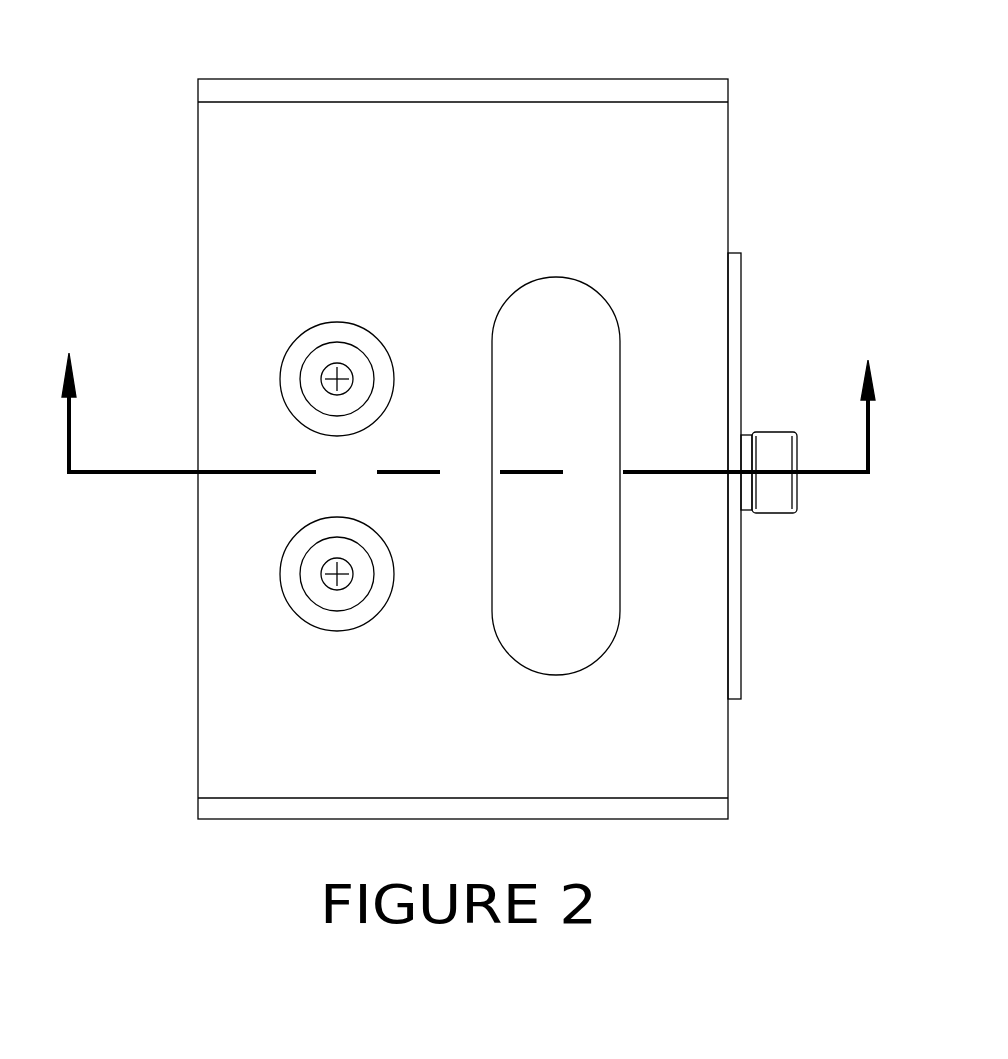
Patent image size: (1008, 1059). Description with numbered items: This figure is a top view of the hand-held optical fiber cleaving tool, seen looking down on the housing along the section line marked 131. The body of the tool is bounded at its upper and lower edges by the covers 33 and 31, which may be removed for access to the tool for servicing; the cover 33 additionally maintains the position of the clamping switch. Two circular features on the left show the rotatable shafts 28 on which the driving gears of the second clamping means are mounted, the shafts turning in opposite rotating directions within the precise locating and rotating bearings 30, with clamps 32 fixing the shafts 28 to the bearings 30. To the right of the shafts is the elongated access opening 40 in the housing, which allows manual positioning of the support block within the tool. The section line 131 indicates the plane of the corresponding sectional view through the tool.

The rotatable shafts 28 is at (255, 340).
The bearings 30 is at (303, 417).
The clamps 32 is at (225, 466).
The cover 33 is at (463, 51).
The cover 31 is at (516, 826).
The access opening 40 is at (676, 402).
The section line 131 is at (469, 375).